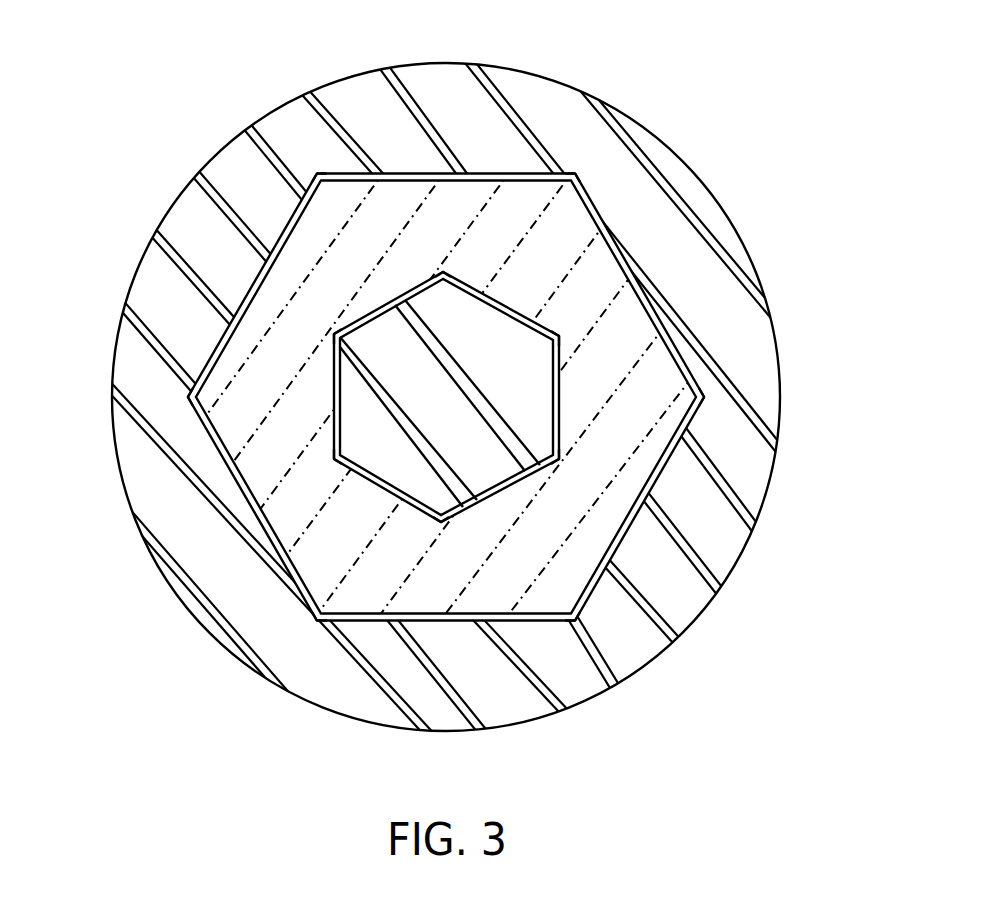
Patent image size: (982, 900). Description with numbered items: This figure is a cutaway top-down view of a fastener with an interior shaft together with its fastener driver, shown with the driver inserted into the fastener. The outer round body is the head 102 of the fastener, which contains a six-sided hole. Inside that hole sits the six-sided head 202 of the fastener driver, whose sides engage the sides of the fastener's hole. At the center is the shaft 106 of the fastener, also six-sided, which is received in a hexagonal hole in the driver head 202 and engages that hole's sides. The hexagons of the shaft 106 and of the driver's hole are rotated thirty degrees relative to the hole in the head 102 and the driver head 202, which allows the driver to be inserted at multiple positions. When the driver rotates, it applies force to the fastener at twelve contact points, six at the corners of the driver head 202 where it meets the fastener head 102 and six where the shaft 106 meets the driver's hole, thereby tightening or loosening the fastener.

The head 102 is at (522, 387).
The head 202 is at (485, 400).
The shaft 106 is at (446, 397).